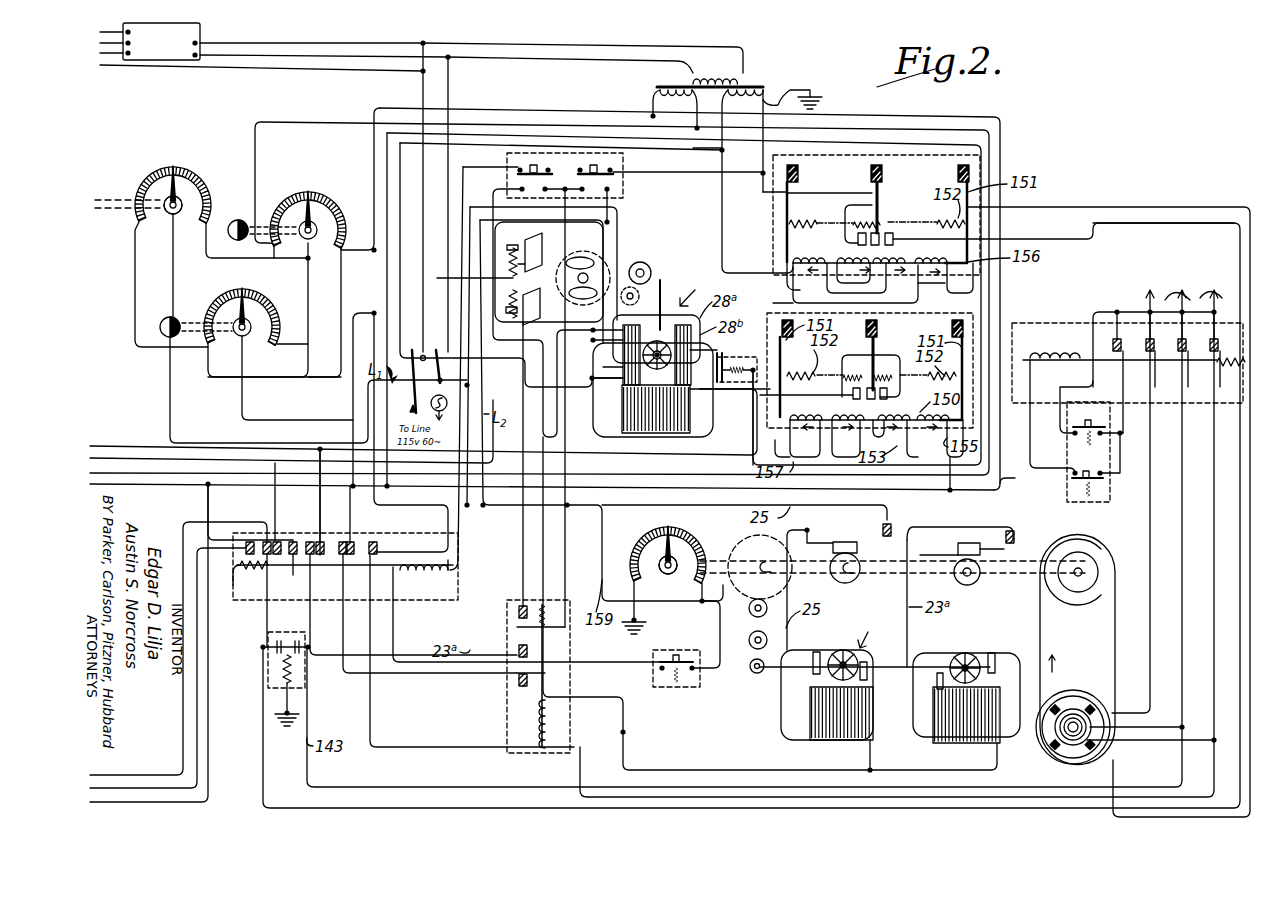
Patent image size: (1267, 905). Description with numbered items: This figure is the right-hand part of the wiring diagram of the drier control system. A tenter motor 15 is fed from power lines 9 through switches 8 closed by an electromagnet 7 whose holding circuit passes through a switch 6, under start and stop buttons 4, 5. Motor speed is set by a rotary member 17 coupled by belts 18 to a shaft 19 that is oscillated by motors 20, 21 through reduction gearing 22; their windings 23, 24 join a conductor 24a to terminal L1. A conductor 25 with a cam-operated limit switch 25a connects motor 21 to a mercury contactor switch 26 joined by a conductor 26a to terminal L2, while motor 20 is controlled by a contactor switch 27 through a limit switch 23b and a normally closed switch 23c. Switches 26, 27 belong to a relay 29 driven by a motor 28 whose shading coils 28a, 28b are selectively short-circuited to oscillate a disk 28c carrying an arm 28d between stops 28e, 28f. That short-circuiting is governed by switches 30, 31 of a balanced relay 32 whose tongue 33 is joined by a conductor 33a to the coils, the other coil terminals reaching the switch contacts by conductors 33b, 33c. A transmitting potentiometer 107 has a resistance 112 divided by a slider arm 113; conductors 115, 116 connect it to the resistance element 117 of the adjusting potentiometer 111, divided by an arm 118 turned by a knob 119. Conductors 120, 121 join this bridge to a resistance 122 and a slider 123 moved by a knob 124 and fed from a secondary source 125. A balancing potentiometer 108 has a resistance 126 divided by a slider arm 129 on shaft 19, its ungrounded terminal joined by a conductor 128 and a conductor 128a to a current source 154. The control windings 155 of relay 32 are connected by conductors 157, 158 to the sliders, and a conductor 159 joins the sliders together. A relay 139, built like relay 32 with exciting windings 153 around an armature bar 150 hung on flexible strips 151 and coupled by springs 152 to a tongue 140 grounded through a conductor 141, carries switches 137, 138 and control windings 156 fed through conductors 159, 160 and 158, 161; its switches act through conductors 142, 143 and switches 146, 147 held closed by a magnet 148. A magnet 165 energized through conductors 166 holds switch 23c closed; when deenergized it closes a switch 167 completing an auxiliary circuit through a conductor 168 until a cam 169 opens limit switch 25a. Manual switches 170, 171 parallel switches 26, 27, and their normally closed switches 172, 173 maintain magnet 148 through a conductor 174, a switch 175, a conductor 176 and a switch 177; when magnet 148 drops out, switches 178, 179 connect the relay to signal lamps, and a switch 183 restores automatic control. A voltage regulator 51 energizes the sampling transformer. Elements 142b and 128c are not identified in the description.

The voltage regulator 51 is at (152, 58).
The power source terminal L1 is at (423, 92).
The power source terminal L2 is at (449, 92).
The transmitting potentiometer 107 is at (155, 166).
The stationary resistance 112 is at (176, 172).
The slider arm 113 is at (186, 219).
The conductor 115 is at (131, 274).
The resistance 122 is at (340, 205).
The knob 124 is at (240, 218).
The adjusting potentiometer 111 is at (286, 266).
The slider 123 is at (340, 250).
The conductor 116 is at (305, 296).
The conductor 121 is at (324, 313).
The stationary resistance element 117 is at (242, 296).
The arm 118 is at (262, 345).
The knob 119 is at (178, 318).
The conductor 157 is at (164, 381).
The conductor 159 is at (237, 412).
The conductor 120 is at (310, 378).
The conductor 160 is at (383, 290).
The conductor 174 is at (452, 468).
The conductor 128 is at (392, 487).
The secondary source 125 is at (655, 92).
The current source 154 is at (808, 86).
The conductor 128a is at (693, 150).
The normally closed switch 172 is at (518, 168).
The normally closed switch 173 is at (613, 168).
The manual switch 170 is at (522, 188).
The manual switch 171 is at (605, 189).
The conductor 26a is at (618, 224).
The mercury contactor switch 26 is at (565, 320).
The stop 28f is at (530, 245).
The disk 28c is at (548, 265).
The contactor switch 27 is at (580, 257).
The stop 28e is at (530, 330).
The arm 28d is at (465, 274).
The motor relay 29 is at (665, 294).
The motor 28 is at (697, 415).
The shading coil 28b is at (593, 330).
The shading coil 28a is at (592, 374).
The conductor 33b is at (735, 356).
The conductor 33c is at (735, 390).
The sensitive relay 139 is at (927, 168).
The conductor 141 is at (840, 194).
The tongue 140 is at (880, 191).
The flexible strips 151 is at (785, 210).
The contractile springs 152 is at (826, 210).
The switch 138 is at (857, 244).
The switch 137 is at (895, 258).
The control windings 156 is at (786, 252).
The armature bar 150 is at (918, 290).
The exciting windings 153 is at (772, 301).
The balanced relay 32 is at (987, 316).
The conductor 33a is at (868, 345).
The tongue 33 is at (871, 360).
The switch 31 is at (852, 396).
The switch 30 is at (924, 412).
The conductor 158 is at (934, 487).
The control windings 155 is at (771, 445).
The conductor 161 is at (1021, 487).
The electromagnet 7 is at (1052, 356).
The switches 8 is at (1145, 300).
The power lines 9 is at (1192, 270).
The switch 6 is at (1120, 370).
The start button 4 is at (1098, 425).
The stop button 5 is at (1098, 476).
The conductor 142 is at (1140, 215).
The conductor 143 is at (1215, 210).
The switch 146 is at (266, 540).
The switch 179 is at (304, 540).
The switch 178 is at (233, 585).
The magnet 148 is at (430, 572).
The switch 147 is at (312, 590).
The switch 177 is at (346, 595).
The conductor 176 is at (423, 675).
The capacitor unit 142b is at (263, 768).
The normally closed switch 23c is at (514, 650).
The conductor 168 is at (518, 535).
The switch 167 is at (514, 610).
The switch 175 is at (519, 698).
The magnet 165 is at (536, 715).
The conductors 166 is at (628, 734).
The switch 183 is at (680, 690).
The resistance 126 is at (673, 530).
The slider arm 129 is at (700, 545).
The balancing potentiometer 108 is at (684, 585).
The ground conductor 128c is at (662, 596).
The conductor 25 is at (570, 476).
The speed reduction gearing 22 is at (754, 672).
The cam 169 is at (852, 580).
The cam operated limit switch 25a is at (898, 550).
The cam operated limit switch 23b is at (1020, 545).
The shaft 19 is at (992, 578).
The belts 18 is at (1108, 635).
The rotary member 17 is at (1092, 675).
The electric motor 15 is at (1116, 750).
The winding 24 is at (835, 748).
The motor 21 is at (859, 632).
The winding 23 is at (968, 748).
The motor 20 is at (999, 645).
The conductor 24a is at (738, 770).